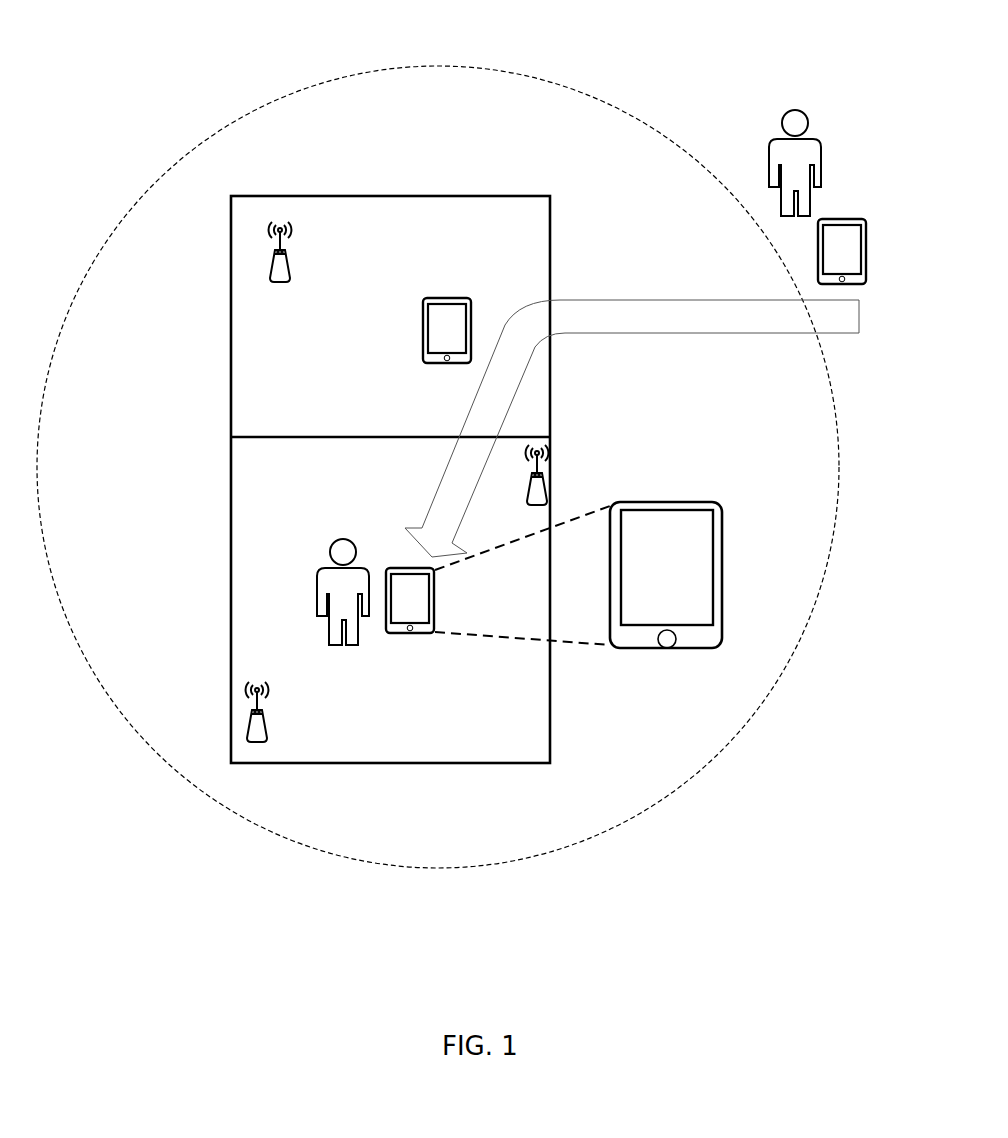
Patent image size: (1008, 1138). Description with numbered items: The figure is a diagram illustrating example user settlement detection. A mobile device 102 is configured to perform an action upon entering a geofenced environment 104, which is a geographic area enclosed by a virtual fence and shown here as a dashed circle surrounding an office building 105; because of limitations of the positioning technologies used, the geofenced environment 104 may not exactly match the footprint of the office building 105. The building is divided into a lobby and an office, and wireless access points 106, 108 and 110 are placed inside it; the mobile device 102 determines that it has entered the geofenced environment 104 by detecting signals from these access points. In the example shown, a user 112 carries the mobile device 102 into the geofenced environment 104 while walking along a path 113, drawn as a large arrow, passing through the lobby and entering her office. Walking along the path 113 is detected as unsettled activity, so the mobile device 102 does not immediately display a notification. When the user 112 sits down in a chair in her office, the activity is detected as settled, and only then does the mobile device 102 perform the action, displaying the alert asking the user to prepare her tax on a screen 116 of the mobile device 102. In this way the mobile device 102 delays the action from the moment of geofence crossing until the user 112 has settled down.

The mobile device 102 is at (447, 298).
The geofenced environment 104 is at (438, 66).
The office building 105 is at (483, 196).
The wireless access point 106 is at (270, 263).
The wireless access point 108 is at (252, 712).
The wireless access point 110 is at (548, 487).
The user 112 is at (778, 142).
The path 113 is at (670, 300).
The screen 116 is at (714, 532).